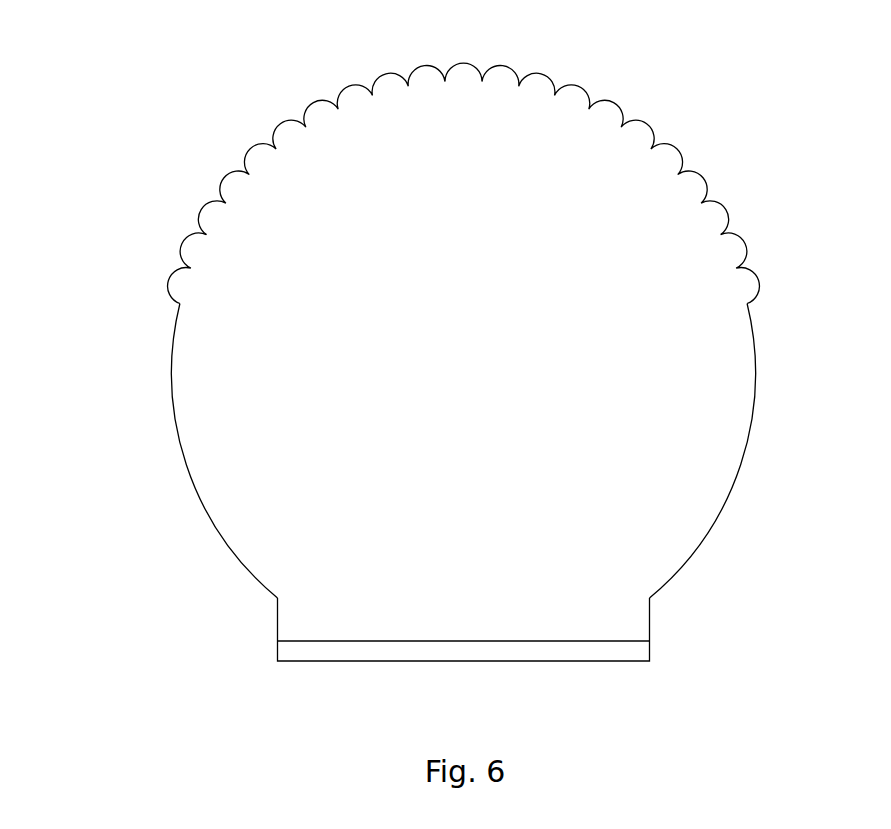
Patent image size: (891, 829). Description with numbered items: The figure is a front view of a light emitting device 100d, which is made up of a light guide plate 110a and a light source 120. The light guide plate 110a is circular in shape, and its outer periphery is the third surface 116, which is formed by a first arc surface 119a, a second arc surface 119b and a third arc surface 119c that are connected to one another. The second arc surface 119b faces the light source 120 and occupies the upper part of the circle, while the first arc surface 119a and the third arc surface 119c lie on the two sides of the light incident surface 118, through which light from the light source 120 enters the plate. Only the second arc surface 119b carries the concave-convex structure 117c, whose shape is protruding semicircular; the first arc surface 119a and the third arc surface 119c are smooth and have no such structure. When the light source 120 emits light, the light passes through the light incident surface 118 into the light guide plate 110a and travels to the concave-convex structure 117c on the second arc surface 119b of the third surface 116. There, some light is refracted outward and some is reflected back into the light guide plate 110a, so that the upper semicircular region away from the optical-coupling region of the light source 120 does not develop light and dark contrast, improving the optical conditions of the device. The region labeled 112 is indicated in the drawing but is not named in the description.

The light emitting device 100d is at (77, 79).
The light guide plate 110a is at (463, 451).
The cavity 112 is at (720, 335).
The third surface 116 is at (170, 338).
The concave-convex structure 117c is at (425, 62).
The light incident surface 118 is at (584, 652).
The first arc surface 119a is at (171, 451).
The second arc surface 119b is at (180, 221).
The third arc surface 119c is at (762, 422).
The light source 120 is at (364, 649).